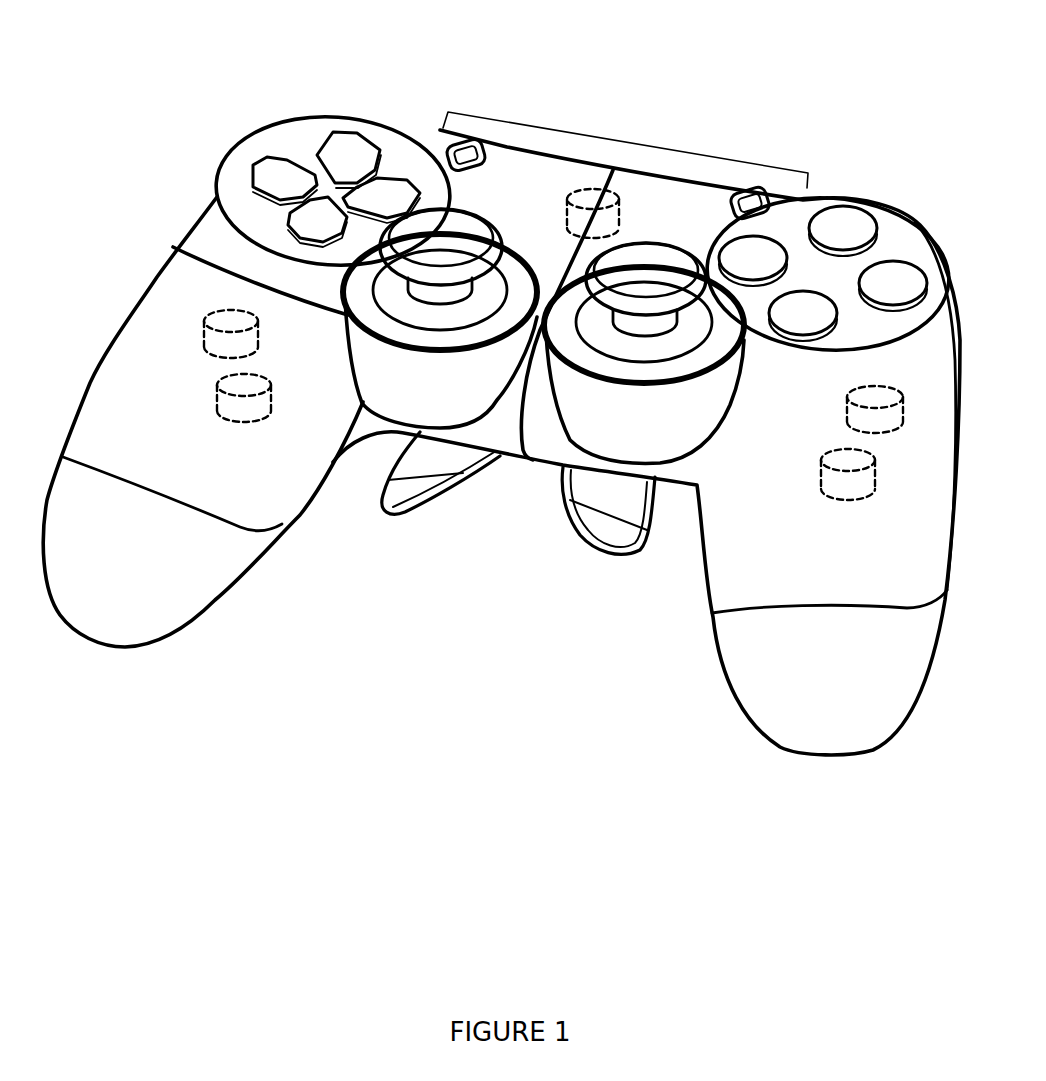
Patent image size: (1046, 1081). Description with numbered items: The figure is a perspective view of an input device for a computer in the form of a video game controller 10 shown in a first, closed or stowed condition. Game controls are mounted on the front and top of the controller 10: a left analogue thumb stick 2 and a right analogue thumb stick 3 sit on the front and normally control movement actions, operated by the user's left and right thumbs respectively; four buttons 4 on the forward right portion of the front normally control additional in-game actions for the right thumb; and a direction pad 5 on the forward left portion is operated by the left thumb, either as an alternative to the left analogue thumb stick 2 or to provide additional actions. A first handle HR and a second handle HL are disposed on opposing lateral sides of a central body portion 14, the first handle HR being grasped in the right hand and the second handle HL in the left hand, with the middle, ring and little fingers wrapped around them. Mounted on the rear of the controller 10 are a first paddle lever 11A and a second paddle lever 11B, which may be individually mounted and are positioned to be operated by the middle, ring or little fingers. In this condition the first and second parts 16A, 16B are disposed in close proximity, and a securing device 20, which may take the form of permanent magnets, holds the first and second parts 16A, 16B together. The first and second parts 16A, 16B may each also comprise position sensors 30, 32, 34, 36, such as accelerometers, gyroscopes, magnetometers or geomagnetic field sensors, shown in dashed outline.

The video game controller 10 is at (241, 89).
The left analogue thumb stick 2 is at (435, 252).
The right analogue thumb stick 3 is at (637, 284).
The buttons 4 is at (852, 239).
The direction pad 5 is at (358, 143).
The central body portion 14 is at (627, 142).
The securing device 20 is at (580, 197).
The position sensor 30 is at (877, 400).
The position sensor 32 is at (843, 463).
The position sensor 34 is at (222, 318).
The position sensor 36 is at (232, 389).
The first paddle lever 11A is at (397, 497).
The second paddle lever 11B is at (613, 535).
The first part 16A is at (803, 686).
The second part 16B is at (117, 552).
The second handle HL is at (136, 607).
The first handle HR is at (747, 655).